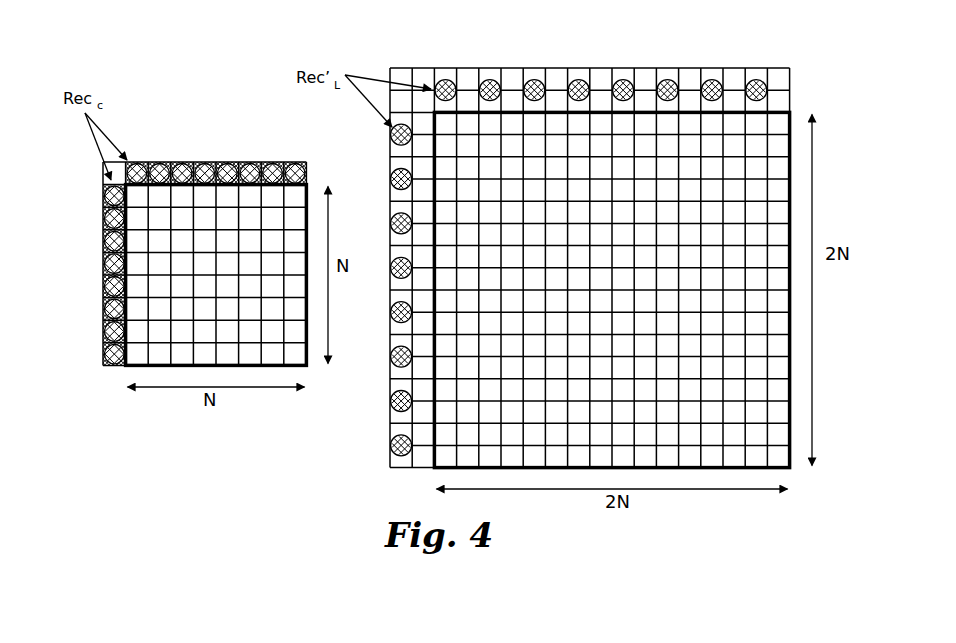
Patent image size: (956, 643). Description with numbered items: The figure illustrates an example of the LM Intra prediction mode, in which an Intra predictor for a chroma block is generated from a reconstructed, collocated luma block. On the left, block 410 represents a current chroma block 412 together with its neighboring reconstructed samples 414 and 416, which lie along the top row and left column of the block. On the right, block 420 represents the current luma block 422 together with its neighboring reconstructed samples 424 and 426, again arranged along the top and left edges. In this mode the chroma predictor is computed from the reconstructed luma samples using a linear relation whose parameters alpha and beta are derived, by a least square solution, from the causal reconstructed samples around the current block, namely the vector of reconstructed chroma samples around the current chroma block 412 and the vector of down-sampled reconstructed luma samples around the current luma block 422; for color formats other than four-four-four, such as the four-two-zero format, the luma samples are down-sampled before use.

The block 410 is at (206, 136).
The current chroma block 412 is at (313, 361).
The neighboring reconstructed samples 414 is at (311, 173).
The neighboring reconstructed samples 416 is at (114, 368).
The block 420 is at (632, 64).
The current luma block 422 is at (796, 468).
The neighboring reconstructed samples 424 is at (798, 90).
The neighboring reconstructed samples 426 is at (401, 471).